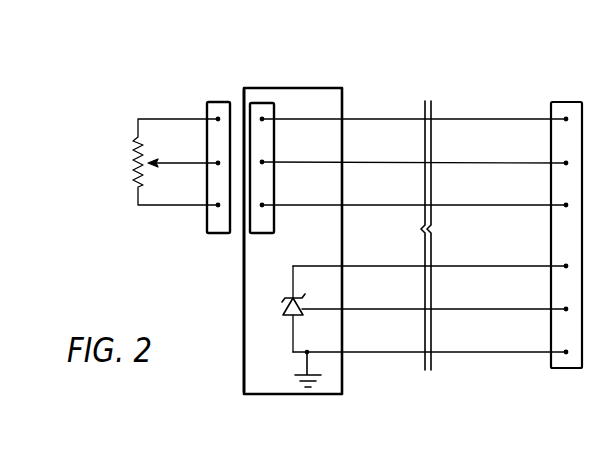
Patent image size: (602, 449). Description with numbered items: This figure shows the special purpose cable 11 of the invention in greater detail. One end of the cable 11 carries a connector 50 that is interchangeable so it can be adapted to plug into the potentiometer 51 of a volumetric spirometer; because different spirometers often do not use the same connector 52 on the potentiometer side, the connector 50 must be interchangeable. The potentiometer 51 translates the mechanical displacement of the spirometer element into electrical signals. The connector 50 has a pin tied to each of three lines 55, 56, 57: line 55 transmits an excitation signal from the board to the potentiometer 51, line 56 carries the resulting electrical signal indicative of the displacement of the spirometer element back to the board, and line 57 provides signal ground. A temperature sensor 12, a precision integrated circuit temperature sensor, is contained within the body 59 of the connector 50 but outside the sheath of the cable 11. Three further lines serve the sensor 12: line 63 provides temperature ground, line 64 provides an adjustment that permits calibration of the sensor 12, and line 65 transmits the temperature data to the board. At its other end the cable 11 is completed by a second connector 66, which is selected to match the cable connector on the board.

The cable 11 is at (356, 85).
The temperature sensor 12 is at (283, 365).
The connector 50 is at (263, 102).
The potentiometer 51 is at (158, 106).
The connector 52 is at (219, 101).
The line 55 is at (314, 121).
The line 56 is at (314, 164).
The line 57 is at (314, 207).
The body 59 is at (243, 301).
The line 63 is at (496, 354).
The line 64 is at (494, 311).
The line 65 is at (483, 268).
The second connector 66 is at (572, 101).